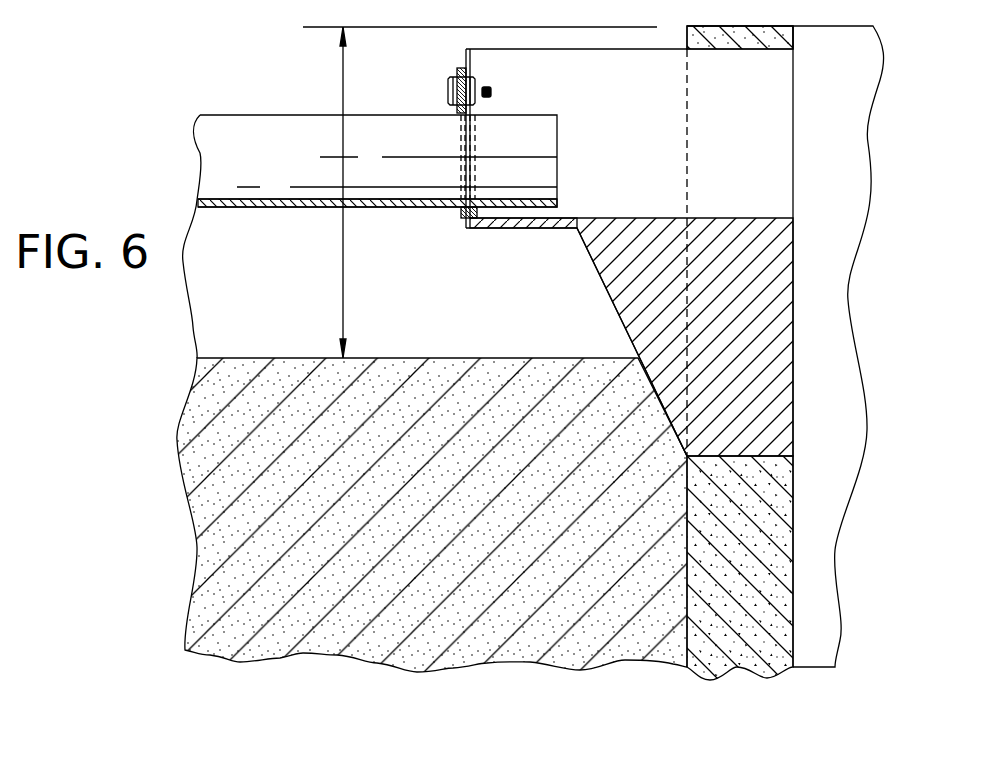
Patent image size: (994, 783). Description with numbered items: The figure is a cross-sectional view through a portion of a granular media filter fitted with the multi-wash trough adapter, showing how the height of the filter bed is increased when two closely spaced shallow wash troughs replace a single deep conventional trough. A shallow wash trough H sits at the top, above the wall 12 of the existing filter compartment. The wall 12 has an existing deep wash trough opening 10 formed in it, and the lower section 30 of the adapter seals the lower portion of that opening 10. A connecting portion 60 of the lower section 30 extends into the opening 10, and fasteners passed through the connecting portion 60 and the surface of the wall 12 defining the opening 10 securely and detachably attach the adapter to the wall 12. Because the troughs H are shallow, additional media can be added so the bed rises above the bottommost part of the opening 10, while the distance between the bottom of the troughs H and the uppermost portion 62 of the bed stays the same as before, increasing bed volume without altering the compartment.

The deep wash trough opening 10 is at (780, 140).
The wall 12 is at (770, 557).
The lower section 30 is at (590, 272).
The connecting portion 60 is at (777, 337).
The uppermost portion of the bed 62 is at (233, 358).
The shallow wash trough H is at (218, 197).